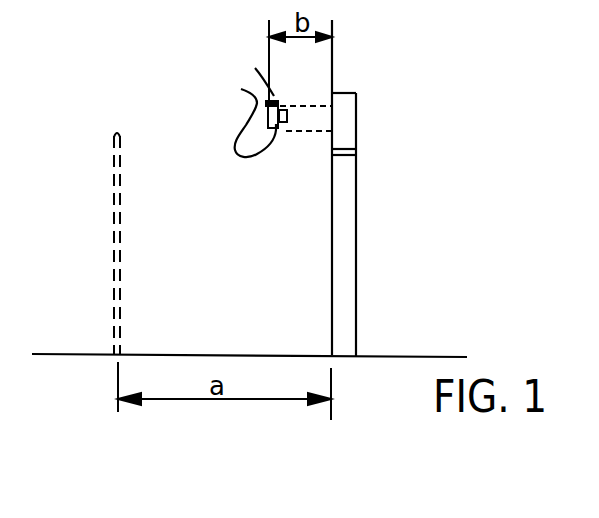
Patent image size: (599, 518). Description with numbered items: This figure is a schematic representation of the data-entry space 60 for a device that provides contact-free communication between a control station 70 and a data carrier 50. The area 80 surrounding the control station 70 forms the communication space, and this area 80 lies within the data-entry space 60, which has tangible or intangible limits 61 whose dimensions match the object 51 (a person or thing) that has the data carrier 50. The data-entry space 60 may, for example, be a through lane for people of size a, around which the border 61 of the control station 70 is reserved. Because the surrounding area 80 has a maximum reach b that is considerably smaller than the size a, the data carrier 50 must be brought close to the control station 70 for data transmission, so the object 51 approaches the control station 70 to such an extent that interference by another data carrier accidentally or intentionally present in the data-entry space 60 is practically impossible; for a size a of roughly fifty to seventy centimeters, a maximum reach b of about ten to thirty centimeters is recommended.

The data carrier 50 is at (287, 117).
The object 51 is at (273, 100).
The data-entry space 60 is at (171, 148).
The limits 61 is at (112, 229).
The control station 70 is at (362, 109).
The area surrounding the control station 80 is at (313, 131).